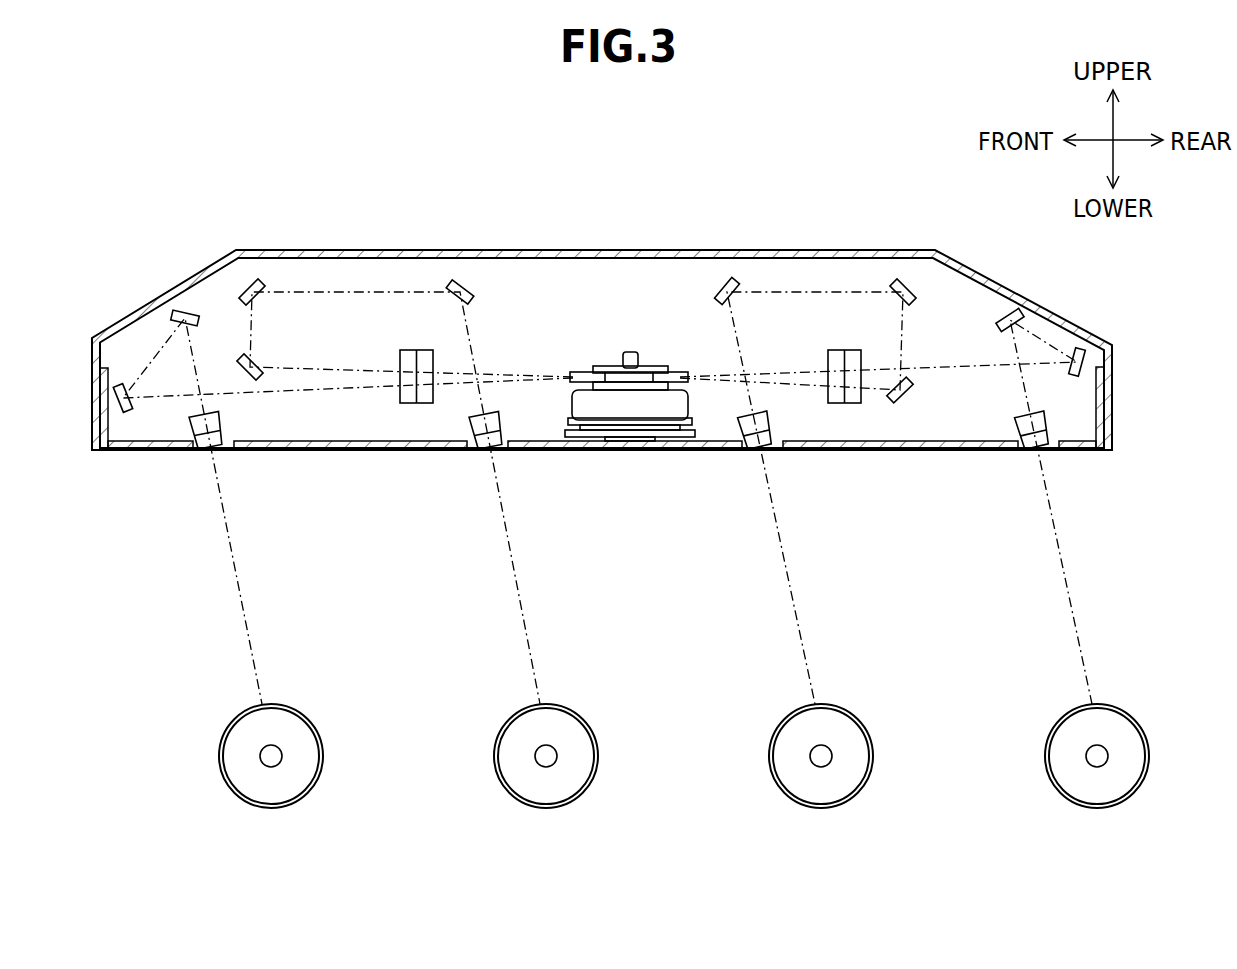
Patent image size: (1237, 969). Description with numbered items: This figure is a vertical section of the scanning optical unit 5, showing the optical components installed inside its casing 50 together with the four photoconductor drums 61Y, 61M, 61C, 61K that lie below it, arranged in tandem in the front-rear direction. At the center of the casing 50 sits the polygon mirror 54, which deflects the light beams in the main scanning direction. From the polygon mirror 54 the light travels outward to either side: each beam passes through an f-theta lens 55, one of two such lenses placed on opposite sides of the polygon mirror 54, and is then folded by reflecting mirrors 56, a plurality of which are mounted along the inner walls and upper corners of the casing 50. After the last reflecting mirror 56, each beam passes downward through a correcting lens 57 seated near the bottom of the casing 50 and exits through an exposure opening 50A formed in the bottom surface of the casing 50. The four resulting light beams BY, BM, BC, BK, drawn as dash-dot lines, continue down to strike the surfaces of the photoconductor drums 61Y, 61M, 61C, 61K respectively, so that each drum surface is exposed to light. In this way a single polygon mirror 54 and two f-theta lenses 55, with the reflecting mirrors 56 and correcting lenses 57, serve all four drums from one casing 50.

The scanning optical unit 5 is at (826, 196).
The casing 50 is at (337, 244).
The exposure opening 50A is at (222, 451).
The polygon mirror 54 is at (671, 366).
The f-theta lens 55 is at (412, 350).
The reflecting mirror 56 is at (589, 318).
The correcting lens 57 is at (620, 421).
The photoconductor drum 61Y is at (272, 808).
The photoconductor drum 61M is at (547, 808).
The photoconductor drum 61C is at (822, 808).
The photoconductor drum 61K is at (1098, 808).
The light beam BY is at (247, 627).
The light beam BM is at (525, 627).
The light beam BC is at (799, 627).
The light beam BK is at (1076, 627).